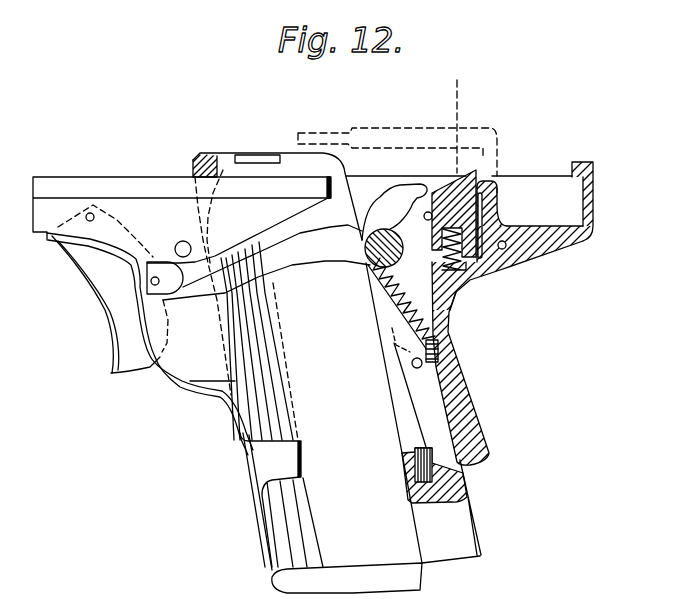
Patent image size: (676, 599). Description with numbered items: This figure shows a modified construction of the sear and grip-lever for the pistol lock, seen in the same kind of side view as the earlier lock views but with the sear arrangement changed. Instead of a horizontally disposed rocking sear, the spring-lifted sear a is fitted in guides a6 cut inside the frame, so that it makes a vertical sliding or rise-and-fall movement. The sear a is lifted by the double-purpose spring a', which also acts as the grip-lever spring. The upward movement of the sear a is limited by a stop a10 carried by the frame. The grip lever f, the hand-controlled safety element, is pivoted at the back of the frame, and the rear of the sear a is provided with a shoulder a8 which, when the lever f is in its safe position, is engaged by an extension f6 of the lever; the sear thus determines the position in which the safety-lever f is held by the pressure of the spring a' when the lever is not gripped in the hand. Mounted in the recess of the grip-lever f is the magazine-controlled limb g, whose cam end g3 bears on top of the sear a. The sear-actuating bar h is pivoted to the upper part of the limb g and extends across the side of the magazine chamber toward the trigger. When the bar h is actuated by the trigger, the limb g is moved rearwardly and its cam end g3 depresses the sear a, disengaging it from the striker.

The sear a is at (574, 201).
The spring a' is at (509, 268).
The guides a6 is at (458, 172).
The shoulder a8 is at (483, 181).
The stop a10 is at (480, 213).
The grip lever f is at (453, 304).
The extension f6 is at (491, 186).
The magazine-controlled limb g is at (373, 310).
The cam extension g3 is at (397, 212).
The sear-actuating bar h is at (286, 266).